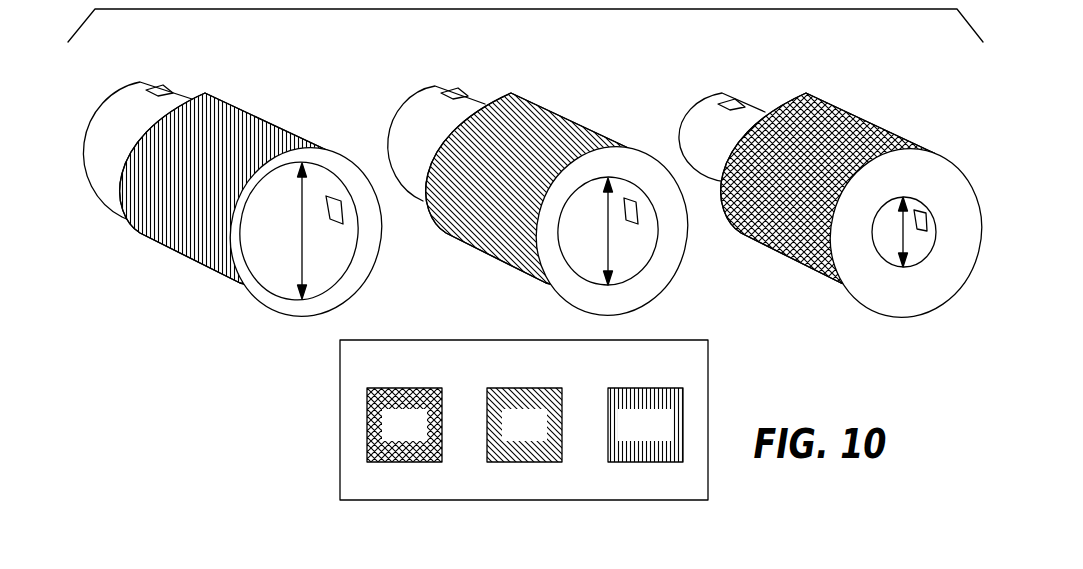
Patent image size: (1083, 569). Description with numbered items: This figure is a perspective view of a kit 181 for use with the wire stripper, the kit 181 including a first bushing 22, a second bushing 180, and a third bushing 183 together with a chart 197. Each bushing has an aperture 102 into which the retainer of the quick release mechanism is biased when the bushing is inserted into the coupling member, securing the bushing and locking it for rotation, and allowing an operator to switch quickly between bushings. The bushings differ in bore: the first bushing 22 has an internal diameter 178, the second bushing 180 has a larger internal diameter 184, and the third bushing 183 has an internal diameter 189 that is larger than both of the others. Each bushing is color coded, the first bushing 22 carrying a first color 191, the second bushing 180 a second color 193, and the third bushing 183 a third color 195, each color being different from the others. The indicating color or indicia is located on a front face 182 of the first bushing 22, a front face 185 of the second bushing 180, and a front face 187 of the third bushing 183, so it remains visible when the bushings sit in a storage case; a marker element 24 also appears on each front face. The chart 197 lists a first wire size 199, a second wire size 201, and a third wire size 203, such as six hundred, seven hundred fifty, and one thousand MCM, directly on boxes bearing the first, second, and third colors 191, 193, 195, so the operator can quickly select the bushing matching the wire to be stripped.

The first bushing 22 is at (718, 292).
The marker 24 is at (333, 224).
The aperture 102 is at (162, 84).
The internal diameter 178 is at (905, 242).
The second bushing 180 is at (570, 291).
The kit 181 is at (487, 411).
The front face 182 is at (922, 168).
The third bushing 183 is at (416, 291).
The internal diameter 184 is at (608, 252).
The front face 185 is at (627, 162).
The front face 187 is at (326, 158).
The internal diameter 189 is at (302, 210).
The first color 191 is at (812, 258).
The second color 193 is at (513, 257).
The third color 195 is at (207, 268).
The chart 197 is at (708, 367).
The first wire size 199 is at (430, 389).
The second wire size 201 is at (550, 389).
The third wire size 203 is at (670, 389).